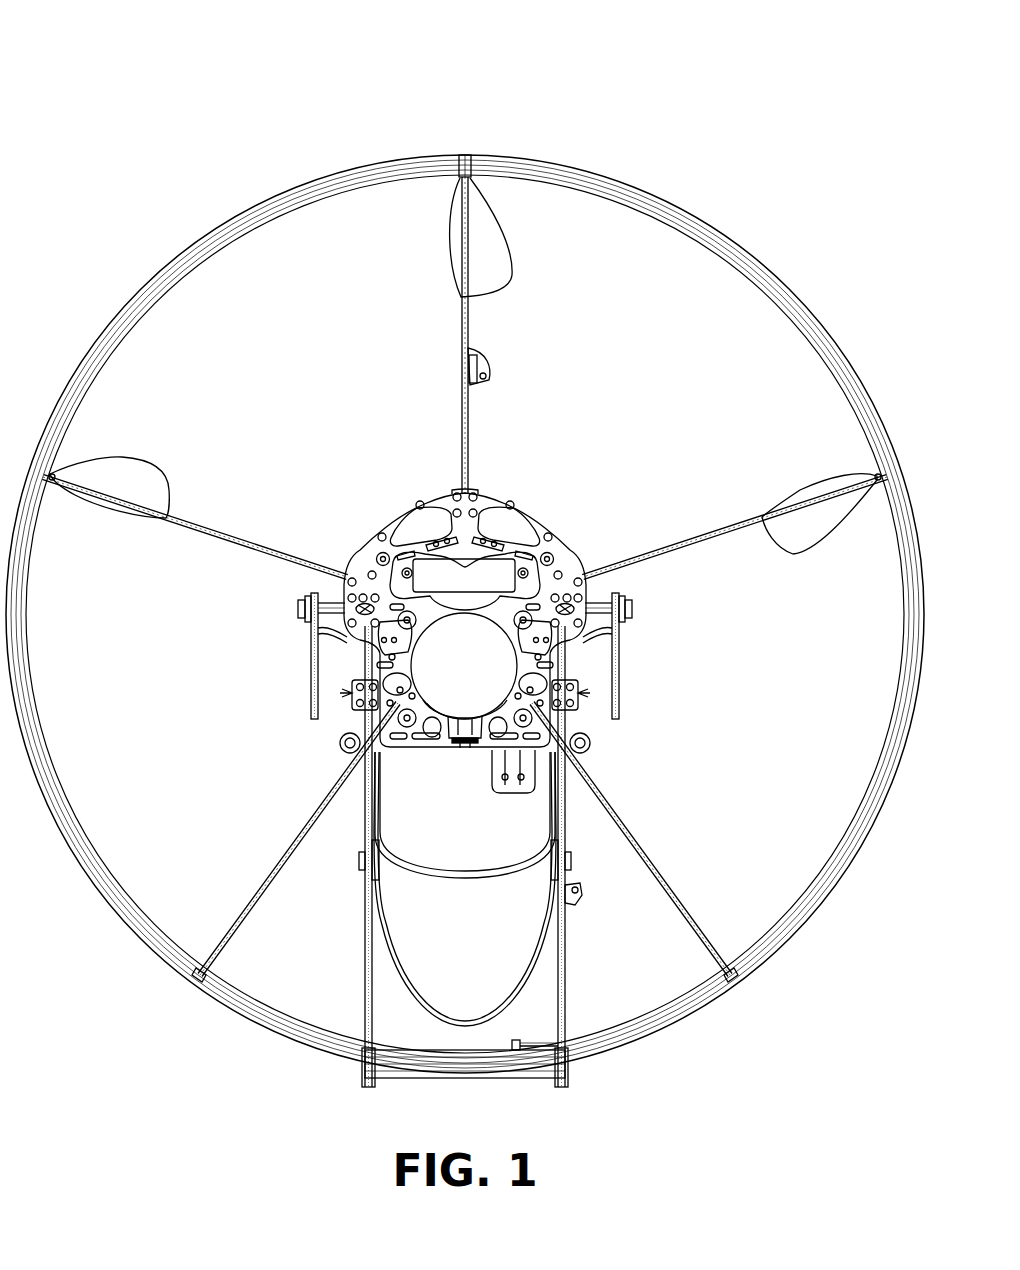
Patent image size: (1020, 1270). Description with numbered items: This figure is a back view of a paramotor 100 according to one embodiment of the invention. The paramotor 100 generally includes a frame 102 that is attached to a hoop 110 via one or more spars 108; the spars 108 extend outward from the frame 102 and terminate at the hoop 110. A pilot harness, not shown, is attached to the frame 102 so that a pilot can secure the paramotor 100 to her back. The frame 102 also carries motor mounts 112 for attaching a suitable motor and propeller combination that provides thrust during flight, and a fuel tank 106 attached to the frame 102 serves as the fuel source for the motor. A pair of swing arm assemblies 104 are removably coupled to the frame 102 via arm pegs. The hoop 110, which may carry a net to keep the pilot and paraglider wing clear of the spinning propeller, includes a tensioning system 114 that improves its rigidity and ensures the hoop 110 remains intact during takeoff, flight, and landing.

The paramotor 100 is at (790, 108).
The frame 102 is at (518, 728).
The swing arm assemblies 104 is at (312, 652).
The fuel tank 106 is at (417, 951).
The spars 108 is at (462, 327).
The hoop 110 is at (815, 898).
The motor mounts 112 is at (506, 622).
The tensioning system 114 is at (533, 1046).